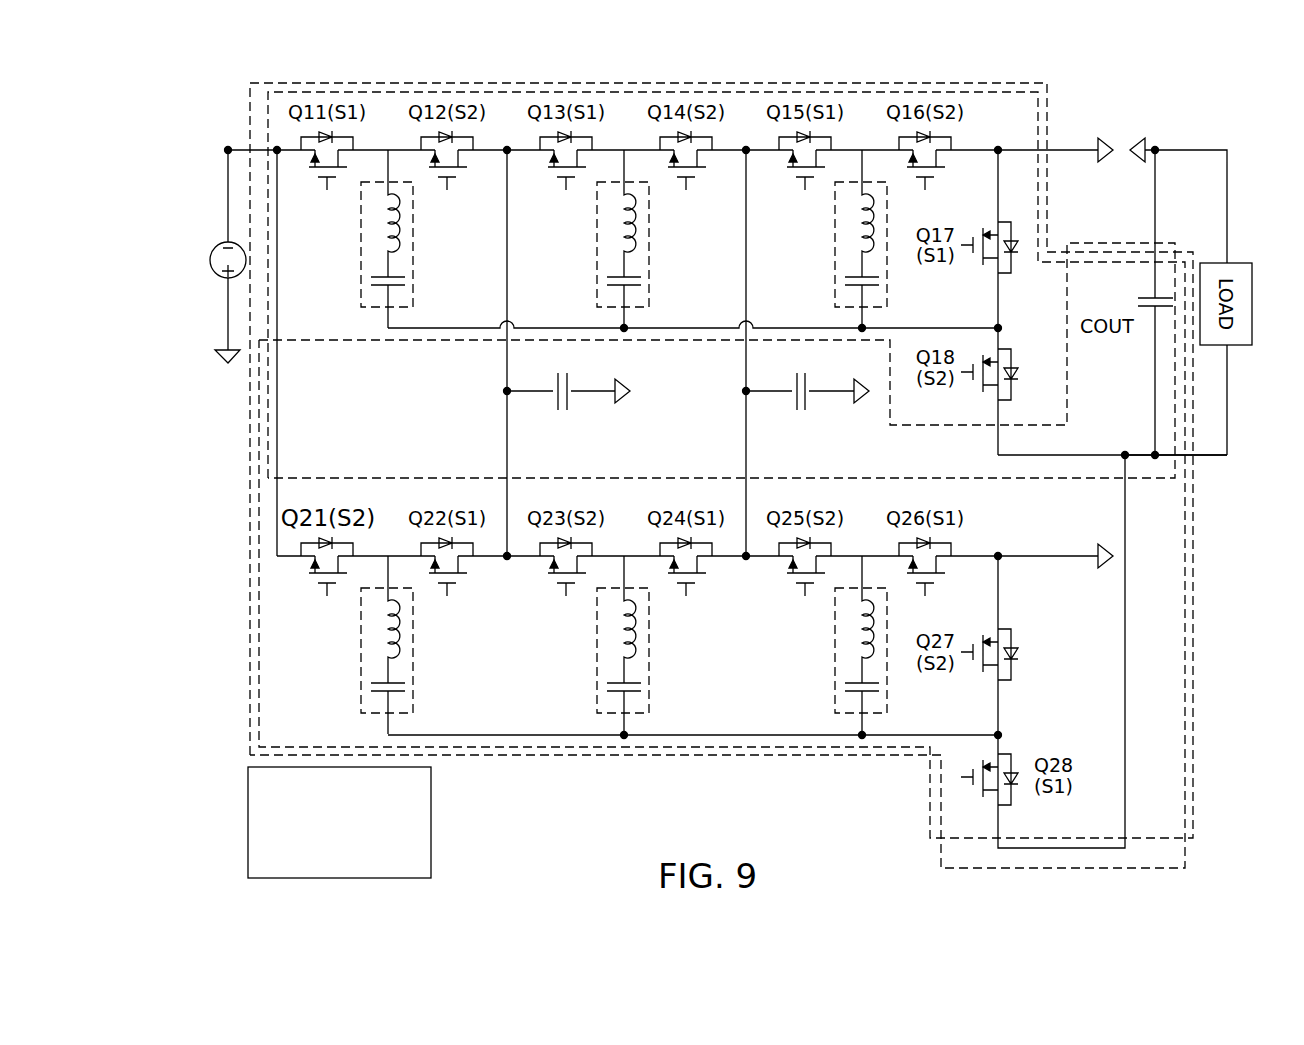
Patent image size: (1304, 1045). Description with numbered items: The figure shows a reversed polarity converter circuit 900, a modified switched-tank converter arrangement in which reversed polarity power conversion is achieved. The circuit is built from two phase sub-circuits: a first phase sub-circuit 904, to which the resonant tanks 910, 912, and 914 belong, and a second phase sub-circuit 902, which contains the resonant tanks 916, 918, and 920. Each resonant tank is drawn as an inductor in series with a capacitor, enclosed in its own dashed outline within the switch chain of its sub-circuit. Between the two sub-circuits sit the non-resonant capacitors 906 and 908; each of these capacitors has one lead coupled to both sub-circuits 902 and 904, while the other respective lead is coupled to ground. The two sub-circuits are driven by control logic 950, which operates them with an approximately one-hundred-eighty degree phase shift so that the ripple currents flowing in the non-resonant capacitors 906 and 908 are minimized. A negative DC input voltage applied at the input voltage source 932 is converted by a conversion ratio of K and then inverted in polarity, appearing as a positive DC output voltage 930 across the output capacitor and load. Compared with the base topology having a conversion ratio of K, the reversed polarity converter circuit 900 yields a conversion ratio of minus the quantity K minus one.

The reversed polarity converter circuit 900 is at (1043, 79).
The second phase sub-circuit 902 is at (257, 609).
The first phase sub-circuit 904 is at (261, 205).
The non-resonant capacitor 906 is at (563, 412).
The non-resonant capacitor 908 is at (802, 412).
The resonant tank 910 is at (413, 243).
The resonant tank 912 is at (649, 243).
The resonant tank 914 is at (887, 285).
The resonant tank 916 is at (413, 649).
The resonant tank 918 is at (649, 648).
The resonant tank 920 is at (887, 690).
The output voltage VOUT 930 is at (1238, 497).
The input voltage VIN 932 is at (176, 278).
The control logic 950 is at (317, 861).